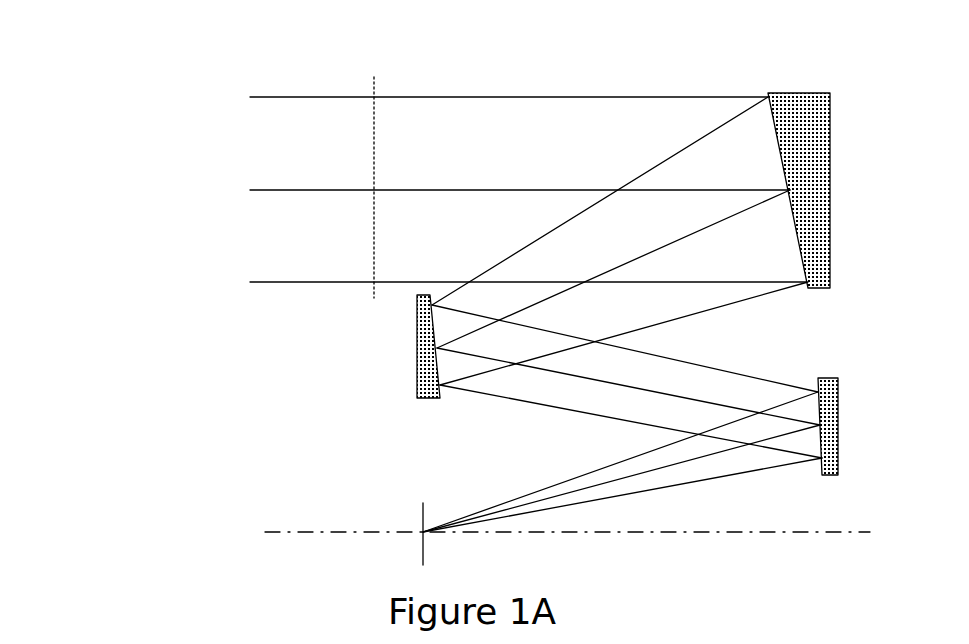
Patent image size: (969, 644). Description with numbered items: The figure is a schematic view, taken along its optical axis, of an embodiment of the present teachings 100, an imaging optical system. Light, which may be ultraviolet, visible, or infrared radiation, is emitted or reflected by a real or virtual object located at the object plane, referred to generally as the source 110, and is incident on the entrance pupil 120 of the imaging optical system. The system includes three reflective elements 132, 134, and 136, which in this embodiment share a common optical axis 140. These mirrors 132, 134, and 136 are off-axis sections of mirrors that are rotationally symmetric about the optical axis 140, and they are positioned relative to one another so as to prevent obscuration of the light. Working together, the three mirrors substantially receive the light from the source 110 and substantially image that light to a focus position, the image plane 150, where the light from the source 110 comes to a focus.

The embodiment of the present teachings 100 is at (97, 82).
The source 110 is at (227, 68).
The entrance pupil 120 is at (374, 298).
The reflective element 132 is at (830, 135).
The reflective element 134 is at (417, 368).
The reflective element 136 is at (840, 423).
The optical axis 140 is at (300, 531).
The focus position (image plane) 150 is at (423, 521).